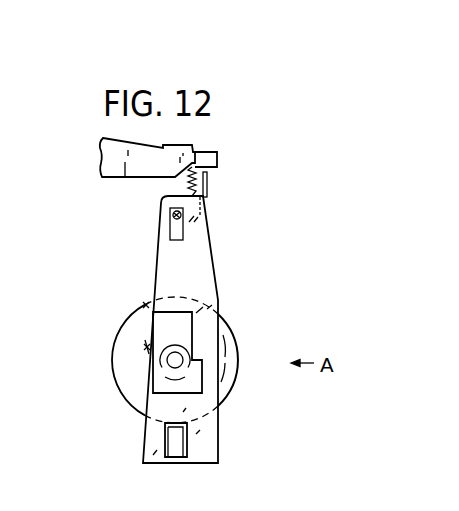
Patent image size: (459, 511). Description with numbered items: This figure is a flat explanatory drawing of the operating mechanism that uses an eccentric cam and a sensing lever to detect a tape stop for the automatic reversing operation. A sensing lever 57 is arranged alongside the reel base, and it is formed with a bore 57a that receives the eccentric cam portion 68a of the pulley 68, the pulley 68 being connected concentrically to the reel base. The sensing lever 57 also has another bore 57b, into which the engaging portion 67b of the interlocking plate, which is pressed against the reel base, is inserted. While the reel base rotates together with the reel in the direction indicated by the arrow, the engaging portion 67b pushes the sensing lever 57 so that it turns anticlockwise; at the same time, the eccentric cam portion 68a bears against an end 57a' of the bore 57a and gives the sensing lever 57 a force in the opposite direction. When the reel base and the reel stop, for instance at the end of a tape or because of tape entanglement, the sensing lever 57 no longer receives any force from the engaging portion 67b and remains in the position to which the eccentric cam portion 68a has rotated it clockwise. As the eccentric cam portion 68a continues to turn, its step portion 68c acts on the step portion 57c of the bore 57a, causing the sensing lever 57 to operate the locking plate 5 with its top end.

The locking plate 5 is at (218, 158).
The sensing lever 57 is at (214, 266).
The bore 57a is at (177, 323).
The end of the bore 57a' is at (103, 302).
The bore 57b is at (188, 443).
The step portion 57c is at (183, 346).
The engaging portion 67b is at (165, 438).
The eccentric cam portion 68a is at (147, 347).
The step portion 68c is at (160, 375).
The pulley 68 is at (239, 348).